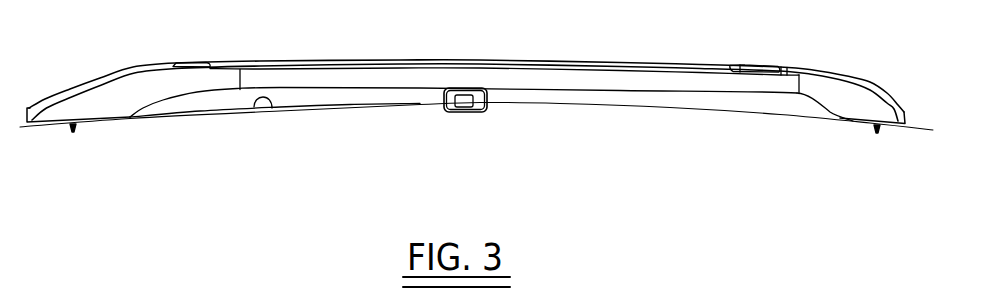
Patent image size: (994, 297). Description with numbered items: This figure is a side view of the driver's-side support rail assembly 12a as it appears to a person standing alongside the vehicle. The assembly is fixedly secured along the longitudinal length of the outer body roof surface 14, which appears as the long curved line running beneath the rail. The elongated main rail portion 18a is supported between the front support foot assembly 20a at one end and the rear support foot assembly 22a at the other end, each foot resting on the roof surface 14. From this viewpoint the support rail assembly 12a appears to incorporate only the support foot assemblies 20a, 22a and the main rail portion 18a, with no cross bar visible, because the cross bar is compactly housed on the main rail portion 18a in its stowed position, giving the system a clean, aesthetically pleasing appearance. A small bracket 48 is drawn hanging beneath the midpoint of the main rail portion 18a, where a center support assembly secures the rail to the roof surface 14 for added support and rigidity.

The support rail assembly 12a is at (133, 65).
The outer body roof surface 14 is at (272, 105).
The main rail portion 18a is at (647, 82).
The front support foot assembly 20a is at (87, 123).
The rear support foot assembly 22a is at (855, 112).
The mounting bracket 48 is at (485, 97).